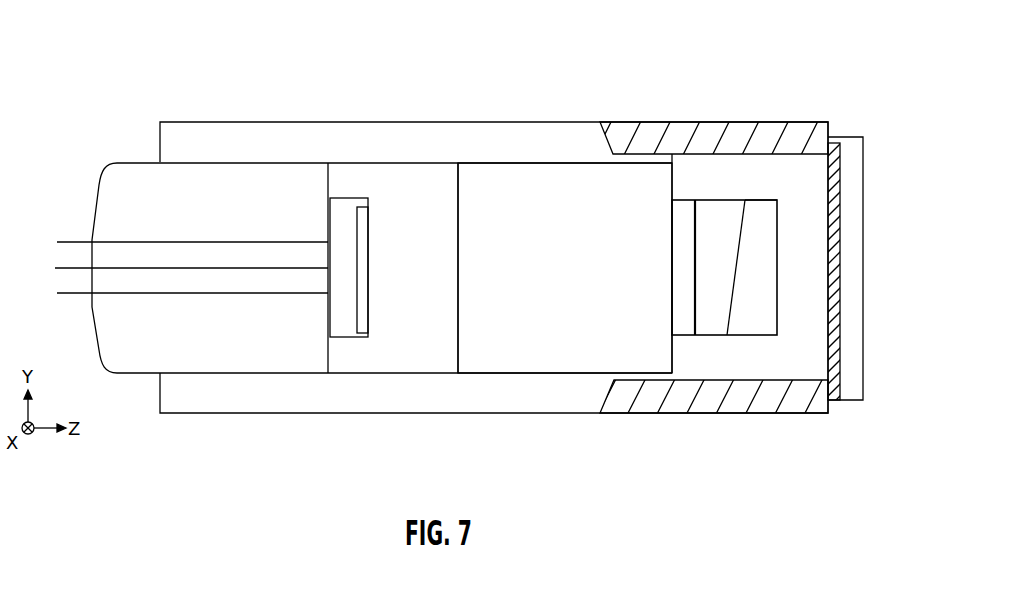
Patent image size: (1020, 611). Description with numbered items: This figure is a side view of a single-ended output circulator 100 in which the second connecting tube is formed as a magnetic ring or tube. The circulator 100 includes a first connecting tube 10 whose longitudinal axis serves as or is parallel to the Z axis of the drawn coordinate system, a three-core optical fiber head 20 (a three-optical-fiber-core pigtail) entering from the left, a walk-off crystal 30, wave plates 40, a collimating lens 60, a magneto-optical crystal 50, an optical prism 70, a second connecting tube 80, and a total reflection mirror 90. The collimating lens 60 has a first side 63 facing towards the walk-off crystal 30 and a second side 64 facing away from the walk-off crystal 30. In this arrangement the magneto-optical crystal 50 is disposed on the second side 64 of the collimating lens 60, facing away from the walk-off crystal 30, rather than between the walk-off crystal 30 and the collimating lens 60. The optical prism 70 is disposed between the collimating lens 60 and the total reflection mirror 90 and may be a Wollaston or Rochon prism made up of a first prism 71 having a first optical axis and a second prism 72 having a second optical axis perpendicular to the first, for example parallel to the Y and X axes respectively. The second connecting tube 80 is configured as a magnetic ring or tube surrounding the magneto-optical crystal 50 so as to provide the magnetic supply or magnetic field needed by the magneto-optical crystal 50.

The single-ended output circulator 100 is at (120, 46).
The first connecting tube 10 is at (318, 129).
The three-core optical fiber head 20 is at (214, 350).
The walk-off crystal 30 is at (337, 327).
The wave plates 40 is at (363, 268).
The magneto-optical crystal 50 is at (683, 267).
The collimating lens 60 is at (503, 345).
The first side 63 is at (446, 186).
The second side 64 is at (683, 178).
The optical prism 70 is at (733, 357).
The first prism 71 is at (720, 302).
The second prism 72 is at (760, 302).
The second connecting tube 80 is at (748, 147).
The total reflection mirror 90 is at (863, 200).